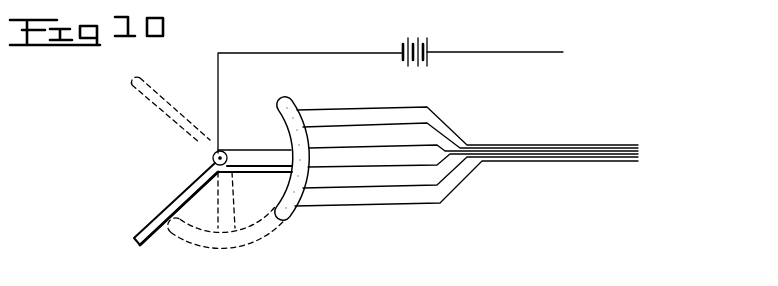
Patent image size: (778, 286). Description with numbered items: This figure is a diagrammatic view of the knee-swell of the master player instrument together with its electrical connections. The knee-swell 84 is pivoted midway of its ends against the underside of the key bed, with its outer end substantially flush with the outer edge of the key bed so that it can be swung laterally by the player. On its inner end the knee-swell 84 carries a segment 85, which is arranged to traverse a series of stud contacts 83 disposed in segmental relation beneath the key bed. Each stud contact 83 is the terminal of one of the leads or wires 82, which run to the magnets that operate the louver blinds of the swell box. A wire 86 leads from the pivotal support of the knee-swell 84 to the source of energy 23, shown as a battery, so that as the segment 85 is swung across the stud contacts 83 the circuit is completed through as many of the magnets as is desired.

The source of energy 23 is at (404, 43).
The leads or wires 82 is at (633, 140).
The stud contacts 83 is at (290, 149).
The knee-swell 84 is at (190, 193).
The segment 85 is at (313, 145).
The wire 86 is at (297, 48).